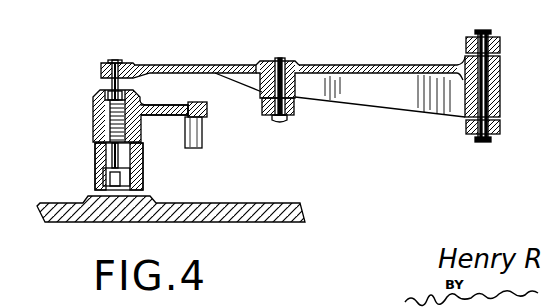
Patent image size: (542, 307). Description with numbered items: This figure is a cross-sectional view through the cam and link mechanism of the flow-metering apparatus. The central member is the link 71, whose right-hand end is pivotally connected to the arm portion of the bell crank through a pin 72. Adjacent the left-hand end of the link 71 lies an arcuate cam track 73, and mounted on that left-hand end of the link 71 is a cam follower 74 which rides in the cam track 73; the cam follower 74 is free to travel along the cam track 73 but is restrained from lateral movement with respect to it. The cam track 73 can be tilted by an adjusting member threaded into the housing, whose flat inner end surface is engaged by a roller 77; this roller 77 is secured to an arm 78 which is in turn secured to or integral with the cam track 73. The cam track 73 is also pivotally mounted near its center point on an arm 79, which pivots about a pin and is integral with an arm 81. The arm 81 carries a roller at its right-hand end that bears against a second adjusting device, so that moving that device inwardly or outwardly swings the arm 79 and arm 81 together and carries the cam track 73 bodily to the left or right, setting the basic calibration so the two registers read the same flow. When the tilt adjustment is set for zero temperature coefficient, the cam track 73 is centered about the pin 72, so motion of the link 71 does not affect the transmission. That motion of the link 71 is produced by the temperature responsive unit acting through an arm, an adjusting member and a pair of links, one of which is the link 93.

The link 71 is at (350, 64).
The pin 72 is at (500, 83).
The arcuate cam track 73 is at (135, 92).
The cam follower 74 is at (97, 91).
The roller 77 is at (202, 135).
The arm 78 is at (162, 115).
The arm 79 is at (95, 165).
The arm 81 is at (222, 203).
The link 93 is at (280, 58).